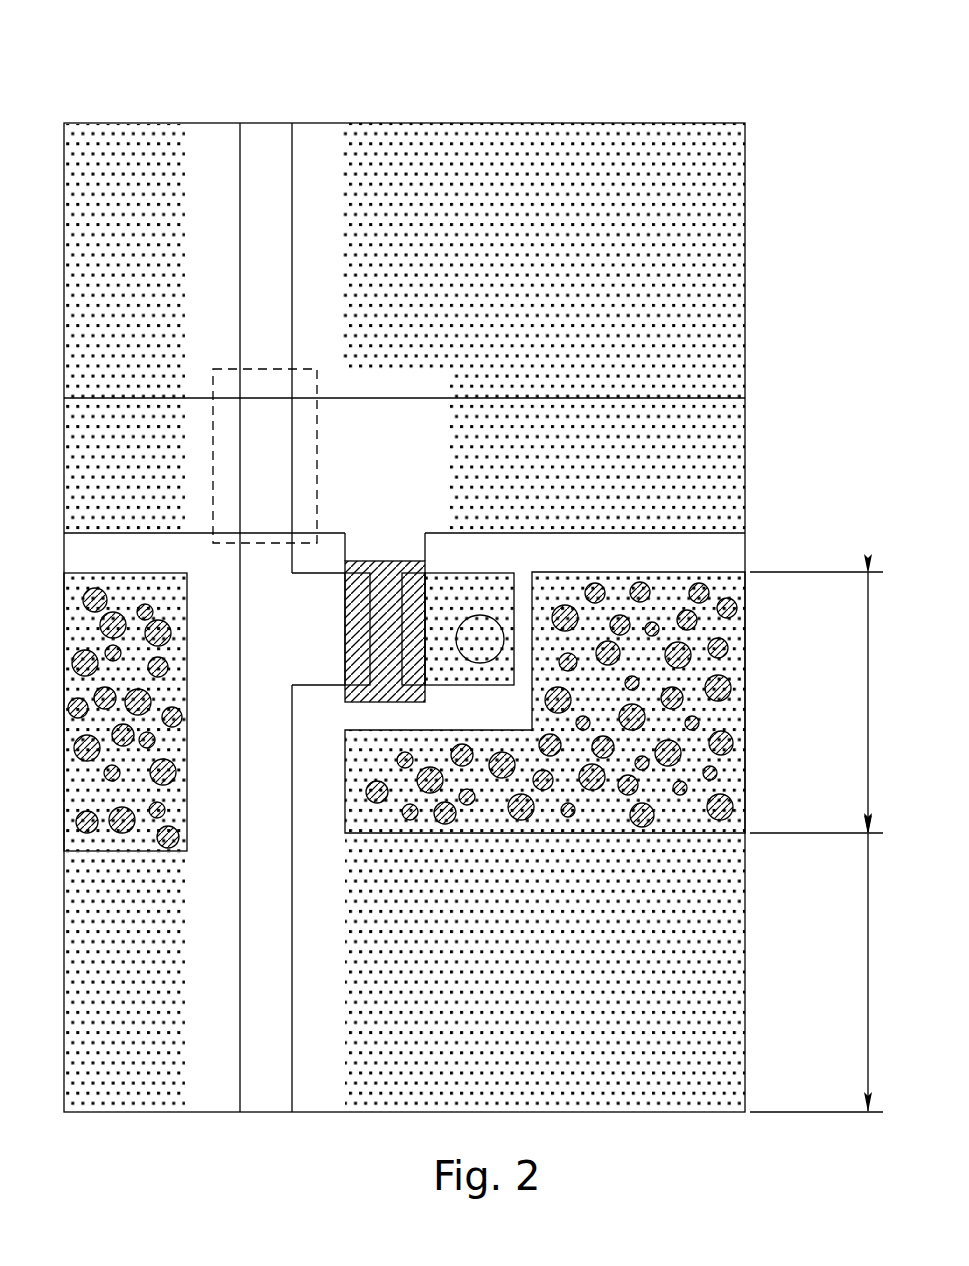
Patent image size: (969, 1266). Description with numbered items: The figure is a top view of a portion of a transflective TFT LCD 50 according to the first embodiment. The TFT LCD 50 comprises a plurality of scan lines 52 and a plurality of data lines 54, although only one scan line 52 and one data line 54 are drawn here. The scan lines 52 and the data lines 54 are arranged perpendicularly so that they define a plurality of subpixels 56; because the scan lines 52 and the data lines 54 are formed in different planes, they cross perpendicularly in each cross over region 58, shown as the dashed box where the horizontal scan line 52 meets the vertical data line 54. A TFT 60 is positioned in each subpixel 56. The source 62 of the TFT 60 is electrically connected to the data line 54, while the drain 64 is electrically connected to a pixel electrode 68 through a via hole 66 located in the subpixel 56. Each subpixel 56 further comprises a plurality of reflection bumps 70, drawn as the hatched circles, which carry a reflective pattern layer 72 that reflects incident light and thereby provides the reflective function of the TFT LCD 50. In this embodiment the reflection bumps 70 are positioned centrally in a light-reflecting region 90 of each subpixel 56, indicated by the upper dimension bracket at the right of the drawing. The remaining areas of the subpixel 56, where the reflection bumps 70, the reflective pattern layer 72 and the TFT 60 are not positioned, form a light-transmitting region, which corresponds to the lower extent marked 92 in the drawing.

The TFT LCD 50 is at (713, 102).
The scan line 52 is at (383, 410).
The data line 54 is at (282, 238).
The subpixel 56 is at (712, 943).
The cross over region 58 is at (213, 366).
The TFT 60 is at (343, 706).
The source 62 is at (361, 589).
The drain 64 is at (411, 588).
The via hole 66 is at (492, 614).
The pixel electrode 68 is at (733, 990).
The reflection bumps 70 is at (730, 692).
The reflective pattern layer 72 is at (738, 780).
The light-reflecting region 90 is at (816, 702).
The thickness 92 is at (816, 973).